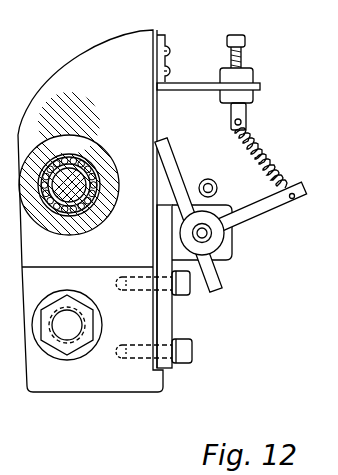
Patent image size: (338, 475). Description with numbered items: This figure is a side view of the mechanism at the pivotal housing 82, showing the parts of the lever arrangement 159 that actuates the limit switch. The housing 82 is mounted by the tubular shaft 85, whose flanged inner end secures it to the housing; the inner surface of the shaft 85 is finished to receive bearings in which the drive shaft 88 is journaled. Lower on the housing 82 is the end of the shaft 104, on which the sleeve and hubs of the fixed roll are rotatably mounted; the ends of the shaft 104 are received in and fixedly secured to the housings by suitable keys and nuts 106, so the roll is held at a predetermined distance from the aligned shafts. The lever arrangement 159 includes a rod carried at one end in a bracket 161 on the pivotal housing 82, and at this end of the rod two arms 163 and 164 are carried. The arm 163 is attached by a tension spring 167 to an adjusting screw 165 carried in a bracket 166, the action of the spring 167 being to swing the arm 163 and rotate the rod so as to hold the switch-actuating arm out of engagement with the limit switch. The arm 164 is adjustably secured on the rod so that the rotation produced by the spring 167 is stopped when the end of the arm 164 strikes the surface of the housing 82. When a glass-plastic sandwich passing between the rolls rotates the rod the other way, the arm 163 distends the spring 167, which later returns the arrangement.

The housing 82 is at (93, 73).
The shaft 85 is at (85, 148).
The drive shaft 88 is at (85, 173).
The shaft 104 is at (63, 325).
The nut 106 is at (85, 328).
The lever arrangement 159 is at (286, 168).
The bracket 161 is at (178, 250).
The arm 163 is at (265, 210).
The arm 164 is at (172, 164).
The adjusting screw 165 is at (247, 112).
The bracket 166 is at (177, 85).
The tension spring 167 is at (263, 160).